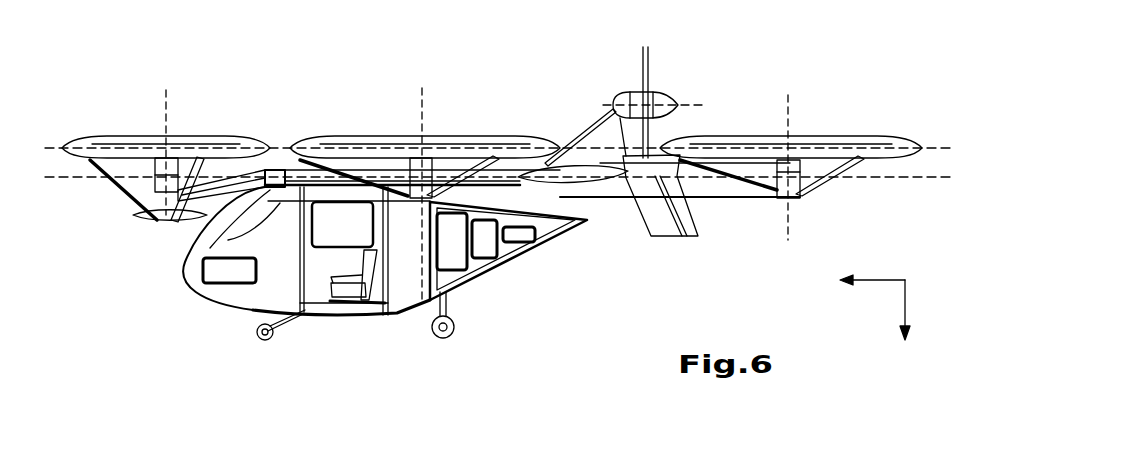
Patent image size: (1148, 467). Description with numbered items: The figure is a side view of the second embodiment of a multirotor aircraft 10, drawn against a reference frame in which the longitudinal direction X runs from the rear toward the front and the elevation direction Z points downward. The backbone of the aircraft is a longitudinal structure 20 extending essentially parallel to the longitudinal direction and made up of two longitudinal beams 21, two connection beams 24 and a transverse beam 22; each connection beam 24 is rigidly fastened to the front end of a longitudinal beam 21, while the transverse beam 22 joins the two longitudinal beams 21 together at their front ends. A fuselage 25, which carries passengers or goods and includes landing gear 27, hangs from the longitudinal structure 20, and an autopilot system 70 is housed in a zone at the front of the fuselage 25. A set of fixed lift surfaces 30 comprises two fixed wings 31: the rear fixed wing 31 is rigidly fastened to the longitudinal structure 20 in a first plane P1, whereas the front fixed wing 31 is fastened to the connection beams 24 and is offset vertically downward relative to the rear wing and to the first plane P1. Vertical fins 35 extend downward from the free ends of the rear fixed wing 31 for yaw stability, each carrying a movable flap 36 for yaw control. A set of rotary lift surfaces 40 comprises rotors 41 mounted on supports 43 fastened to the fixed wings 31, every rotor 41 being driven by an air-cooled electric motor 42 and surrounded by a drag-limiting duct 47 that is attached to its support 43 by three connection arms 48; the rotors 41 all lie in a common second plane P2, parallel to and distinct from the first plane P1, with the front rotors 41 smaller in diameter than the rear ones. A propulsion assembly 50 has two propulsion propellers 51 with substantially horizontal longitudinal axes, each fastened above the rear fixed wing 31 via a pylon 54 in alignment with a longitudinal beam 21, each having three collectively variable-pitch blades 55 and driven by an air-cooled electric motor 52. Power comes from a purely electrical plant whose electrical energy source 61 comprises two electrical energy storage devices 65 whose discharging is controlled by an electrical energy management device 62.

The multirotor aircraft 10 is at (132, 340).
The longitudinal structure 20 is at (336, 160).
The longitudinal beam 21 is at (330, 168).
The transverse beam 22 is at (280, 168).
The connection beam 24 is at (195, 235).
The fuselage 25 is at (253, 295).
The landing gear 27 is at (210, 133).
The set of fixed lift surfaces 30 is at (342, 172).
The fixed wing 31 is at (146, 222).
The vertical fin 35 is at (665, 238).
The movable flap 36 is at (687, 238).
The set of rotary lift surfaces 40 is at (504, 161).
The rotor 41 is at (150, 108).
The electric motor 42 is at (132, 136).
The support 43 is at (583, 197).
The duct 47 is at (475, 137).
The connection arm 48 is at (127, 187).
The propulsion assembly 50 is at (694, 83).
The propulsion propeller 51 is at (694, 83).
The electric motor 52 is at (640, 95).
The pylon 54 is at (605, 130).
The blade 55 is at (650, 65).
The electrical energy source 61 is at (413, 263).
The electrical energy management device 62 is at (518, 262).
The electrical energy storage device 65 is at (478, 262).
The autopilot system 70 is at (220, 273).
The first plane P1 is at (930, 180).
The second plane P2 is at (927, 147).